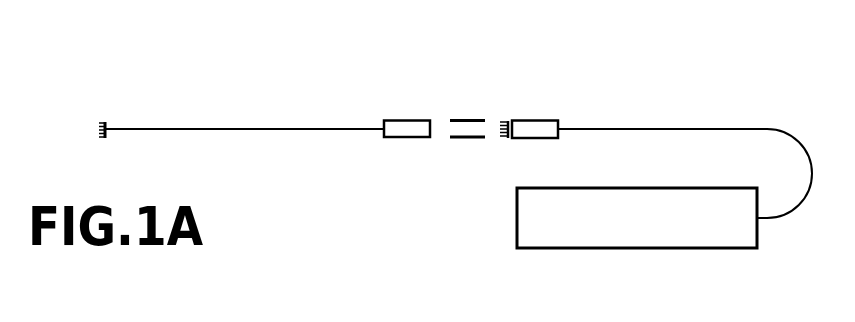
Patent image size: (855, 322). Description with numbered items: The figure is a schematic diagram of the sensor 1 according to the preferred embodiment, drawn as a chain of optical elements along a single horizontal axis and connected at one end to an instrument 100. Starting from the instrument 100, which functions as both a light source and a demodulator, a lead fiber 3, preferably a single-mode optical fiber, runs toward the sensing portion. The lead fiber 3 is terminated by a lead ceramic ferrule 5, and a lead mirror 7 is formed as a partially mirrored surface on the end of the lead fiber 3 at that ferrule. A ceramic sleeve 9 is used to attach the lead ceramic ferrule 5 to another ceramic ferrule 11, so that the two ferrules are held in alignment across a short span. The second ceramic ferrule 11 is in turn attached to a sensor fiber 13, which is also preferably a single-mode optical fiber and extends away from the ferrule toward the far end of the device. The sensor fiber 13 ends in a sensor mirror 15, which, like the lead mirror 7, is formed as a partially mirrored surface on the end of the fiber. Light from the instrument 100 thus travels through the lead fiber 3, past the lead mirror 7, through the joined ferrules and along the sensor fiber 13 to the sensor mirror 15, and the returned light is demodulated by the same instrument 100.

The sensor 1 is at (363, 48).
The lead fiber 3 is at (640, 129).
The lead ceramic ferrule 5 is at (545, 120).
The lead mirror 7 is at (506, 120).
The ceramic sleeve 9 is at (465, 120).
The ceramic ferrule 11 is at (402, 120).
The sensor fiber 13 is at (235, 128).
The sensor mirror 15 is at (107, 122).
The instrument 100 is at (517, 200).